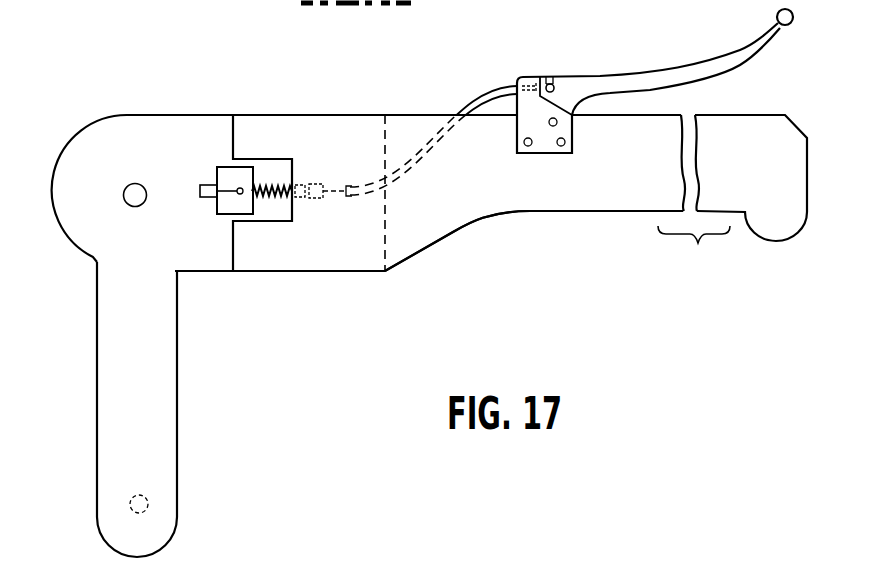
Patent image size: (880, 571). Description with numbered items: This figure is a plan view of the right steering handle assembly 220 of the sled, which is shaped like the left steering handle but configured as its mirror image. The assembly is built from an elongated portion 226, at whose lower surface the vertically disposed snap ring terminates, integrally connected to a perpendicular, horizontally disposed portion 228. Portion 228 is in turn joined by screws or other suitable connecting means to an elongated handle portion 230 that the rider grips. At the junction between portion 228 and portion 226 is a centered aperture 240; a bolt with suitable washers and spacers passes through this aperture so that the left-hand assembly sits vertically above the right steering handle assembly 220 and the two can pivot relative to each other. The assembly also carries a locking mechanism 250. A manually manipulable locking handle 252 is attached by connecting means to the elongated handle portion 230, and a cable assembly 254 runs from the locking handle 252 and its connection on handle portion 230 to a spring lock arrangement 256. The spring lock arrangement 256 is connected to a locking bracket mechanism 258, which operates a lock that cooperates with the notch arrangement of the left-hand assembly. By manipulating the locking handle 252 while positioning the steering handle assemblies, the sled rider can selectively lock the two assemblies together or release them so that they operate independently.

The right steering handle assembly 220 is at (334, 325).
The elongated portion 226 is at (177, 415).
The horizontally disposed portion 228 is at (203, 272).
The elongated handle portion 230 is at (457, 233).
The aperture 240 is at (132, 207).
The locking mechanism 250 is at (583, 53).
The locking handle 252 is at (691, 71).
The cable assembly 254 is at (496, 87).
The spring lock arrangement 256 is at (306, 183).
The locking bracket mechanism 258 is at (266, 165).